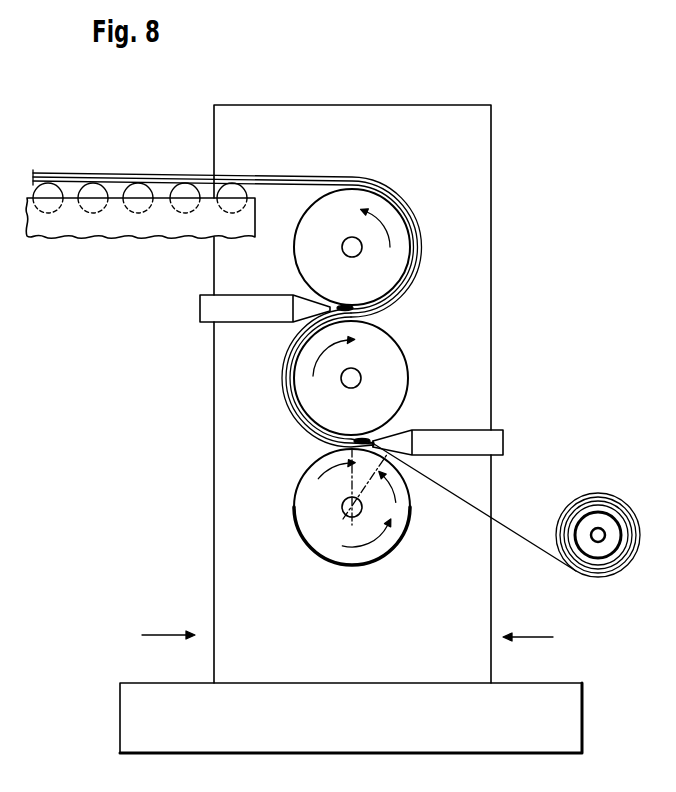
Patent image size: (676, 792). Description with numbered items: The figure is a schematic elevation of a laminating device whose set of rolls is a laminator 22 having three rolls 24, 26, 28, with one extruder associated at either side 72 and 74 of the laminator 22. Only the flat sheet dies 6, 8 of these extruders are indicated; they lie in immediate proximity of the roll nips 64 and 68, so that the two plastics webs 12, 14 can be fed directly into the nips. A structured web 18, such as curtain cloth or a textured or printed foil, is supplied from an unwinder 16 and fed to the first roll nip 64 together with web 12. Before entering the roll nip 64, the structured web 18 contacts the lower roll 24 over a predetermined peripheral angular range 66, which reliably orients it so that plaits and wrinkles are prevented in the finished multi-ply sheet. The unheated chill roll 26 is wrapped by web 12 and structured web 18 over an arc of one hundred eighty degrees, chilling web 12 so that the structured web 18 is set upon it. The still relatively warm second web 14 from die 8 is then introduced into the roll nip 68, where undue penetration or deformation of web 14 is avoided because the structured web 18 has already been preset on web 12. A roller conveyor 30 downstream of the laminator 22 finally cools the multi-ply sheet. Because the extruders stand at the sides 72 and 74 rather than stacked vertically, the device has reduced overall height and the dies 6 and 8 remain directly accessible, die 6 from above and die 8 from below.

The flat sheet die 6 is at (403, 433).
The flat sheet die 8 is at (305, 305).
The web 12 is at (288, 377).
The web 14 is at (412, 273).
The unwinder 16 is at (597, 518).
The structured web 18 is at (525, 535).
The laminator 22 is at (227, 129).
The lower roll 24 is at (303, 515).
The chill roll 26 is at (393, 347).
The roll 28 is at (395, 215).
The roller conveyor 30 is at (120, 230).
The roll nip 64 is at (369, 430).
The peripheral angular range 66 is at (374, 446).
The roll nip 68 is at (338, 302).
The side 72 is at (540, 638).
The side 74 is at (153, 635).